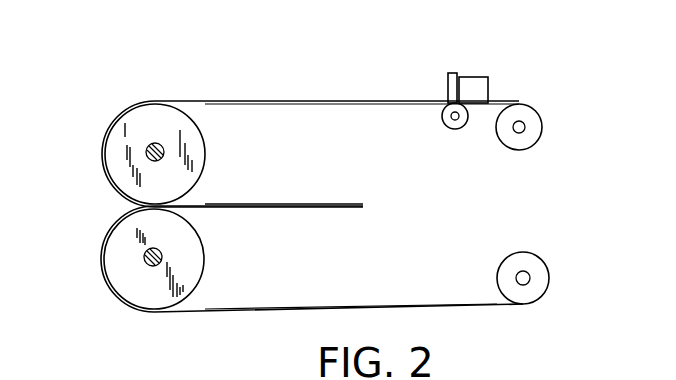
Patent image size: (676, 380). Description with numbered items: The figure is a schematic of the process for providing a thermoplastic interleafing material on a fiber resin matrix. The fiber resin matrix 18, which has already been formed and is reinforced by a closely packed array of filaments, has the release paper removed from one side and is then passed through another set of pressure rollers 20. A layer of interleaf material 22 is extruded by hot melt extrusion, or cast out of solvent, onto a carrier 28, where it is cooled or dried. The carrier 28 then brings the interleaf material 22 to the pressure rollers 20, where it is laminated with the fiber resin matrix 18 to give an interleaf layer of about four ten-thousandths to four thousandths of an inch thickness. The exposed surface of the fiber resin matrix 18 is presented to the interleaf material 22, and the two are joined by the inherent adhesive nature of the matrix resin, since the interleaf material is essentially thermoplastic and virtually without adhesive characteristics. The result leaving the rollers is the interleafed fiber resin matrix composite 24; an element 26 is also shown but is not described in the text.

The fiber resin matrix 18 is at (238, 310).
The pressure rollers 20 is at (104, 195).
The interleaf material 22 is at (252, 100).
The interleafed fiber resin matrix composite 24 is at (243, 203).
The block / guide member 26 is at (468, 85).
The carrier 28 is at (413, 105).